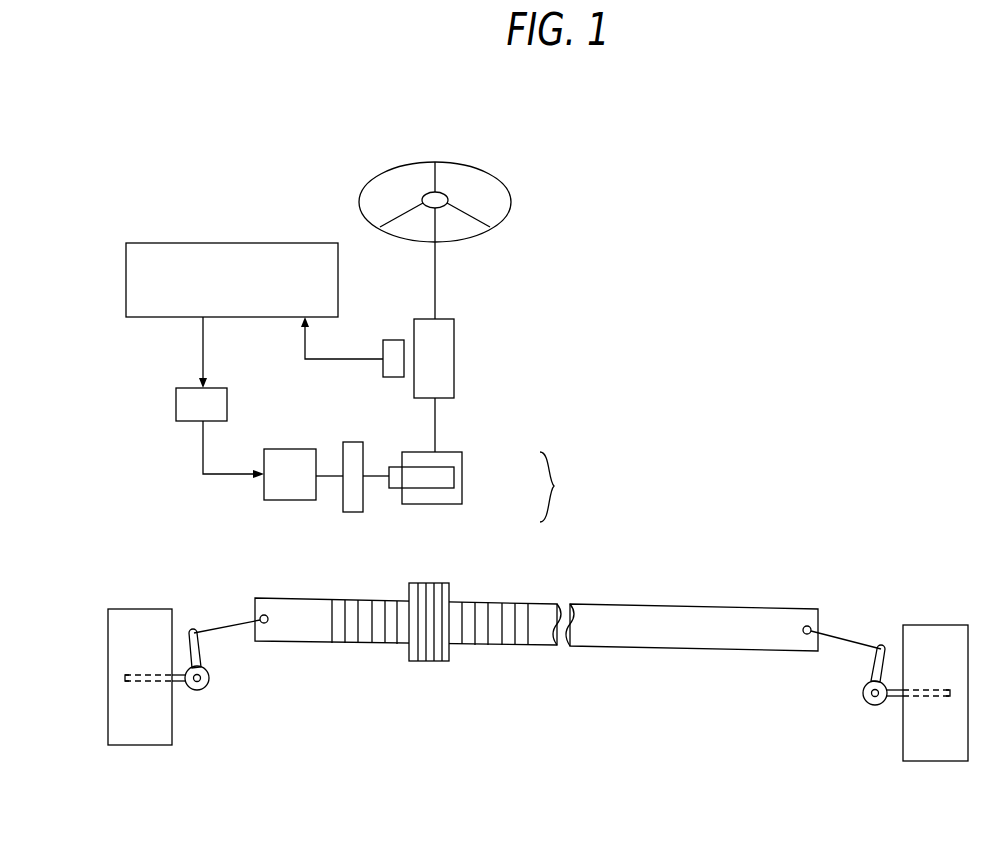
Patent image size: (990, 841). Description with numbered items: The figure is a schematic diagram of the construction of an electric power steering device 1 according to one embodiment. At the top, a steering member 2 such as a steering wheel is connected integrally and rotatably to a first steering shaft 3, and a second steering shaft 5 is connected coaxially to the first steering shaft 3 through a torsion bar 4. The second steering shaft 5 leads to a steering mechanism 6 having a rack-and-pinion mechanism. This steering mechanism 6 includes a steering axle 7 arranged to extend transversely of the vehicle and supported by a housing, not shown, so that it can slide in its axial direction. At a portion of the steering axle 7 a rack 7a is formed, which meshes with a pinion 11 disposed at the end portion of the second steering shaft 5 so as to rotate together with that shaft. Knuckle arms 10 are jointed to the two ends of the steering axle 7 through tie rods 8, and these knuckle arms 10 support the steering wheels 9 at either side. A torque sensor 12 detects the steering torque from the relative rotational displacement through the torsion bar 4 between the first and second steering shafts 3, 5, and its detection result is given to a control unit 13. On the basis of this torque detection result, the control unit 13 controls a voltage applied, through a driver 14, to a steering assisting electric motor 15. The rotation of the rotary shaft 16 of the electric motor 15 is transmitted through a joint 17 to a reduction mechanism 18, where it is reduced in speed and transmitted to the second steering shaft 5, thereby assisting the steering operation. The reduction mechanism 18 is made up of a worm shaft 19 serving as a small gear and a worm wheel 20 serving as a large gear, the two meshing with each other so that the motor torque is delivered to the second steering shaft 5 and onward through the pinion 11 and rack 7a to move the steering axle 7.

The electric power steering device 1 is at (512, 318).
The steering member 2 is at (462, 163).
The first steering shaft 3 is at (435, 292).
The torsion bar 4 is at (448, 348).
The second steering shaft 5 is at (435, 425).
The steering mechanism 6 is at (512, 582).
The steering axle 7 is at (548, 655).
The rack 7a is at (380, 638).
The tie rod 8 is at (225, 622).
The steering wheel 9 is at (165, 720).
The knuckle arm 10 is at (201, 650).
The pinion 11 is at (428, 661).
The torque sensor 12 is at (393, 340).
The control unit 13 is at (240, 243).
The driver 14 is at (180, 404).
The steering assisting electric motor 15 is at (288, 510).
The rotary shaft 16 is at (330, 478).
The joint 17 is at (352, 512).
The reduction mechanism 18 is at (565, 487).
The worm shaft 19 is at (450, 480).
The worm wheel 20 is at (463, 495).